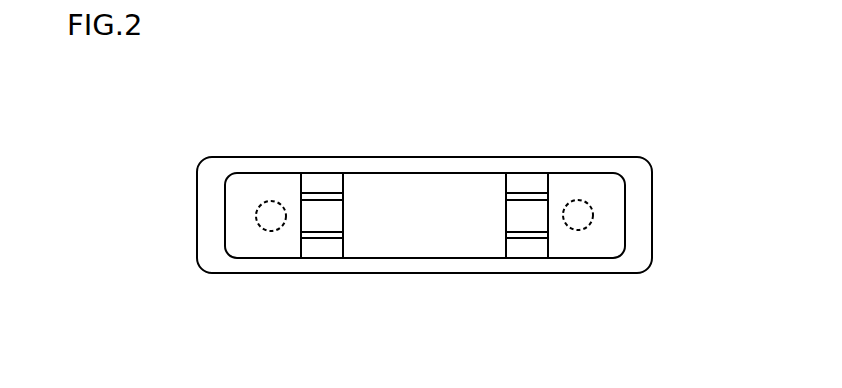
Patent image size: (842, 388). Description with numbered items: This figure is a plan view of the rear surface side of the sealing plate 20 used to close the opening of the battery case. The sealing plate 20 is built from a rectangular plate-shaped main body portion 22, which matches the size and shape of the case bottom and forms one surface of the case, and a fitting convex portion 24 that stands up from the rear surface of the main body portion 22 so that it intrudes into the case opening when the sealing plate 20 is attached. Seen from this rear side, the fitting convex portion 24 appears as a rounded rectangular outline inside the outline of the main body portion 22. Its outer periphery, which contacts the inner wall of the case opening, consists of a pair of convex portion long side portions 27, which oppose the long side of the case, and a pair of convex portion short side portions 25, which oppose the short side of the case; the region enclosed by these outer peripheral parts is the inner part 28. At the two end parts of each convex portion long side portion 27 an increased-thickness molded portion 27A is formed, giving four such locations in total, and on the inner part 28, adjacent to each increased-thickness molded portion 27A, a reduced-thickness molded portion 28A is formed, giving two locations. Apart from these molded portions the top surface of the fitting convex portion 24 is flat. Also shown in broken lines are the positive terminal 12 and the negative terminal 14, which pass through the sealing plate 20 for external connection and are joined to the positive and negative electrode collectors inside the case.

The sealing plate 20 is at (598, 155).
The main body portion 22 is at (431, 166).
The fitting convex portion 24 is at (472, 155).
The convex portion short side portion 25 is at (225, 221).
The convex portion long side portion 27 is at (386, 172).
The increased-thickness molded portion 27A is at (316, 180).
The inner part 28 is at (433, 228).
The reduced-thickness molded portion 28A is at (332, 216).
The positive terminal 12 is at (281, 227).
The negative terminal 14 is at (580, 230).